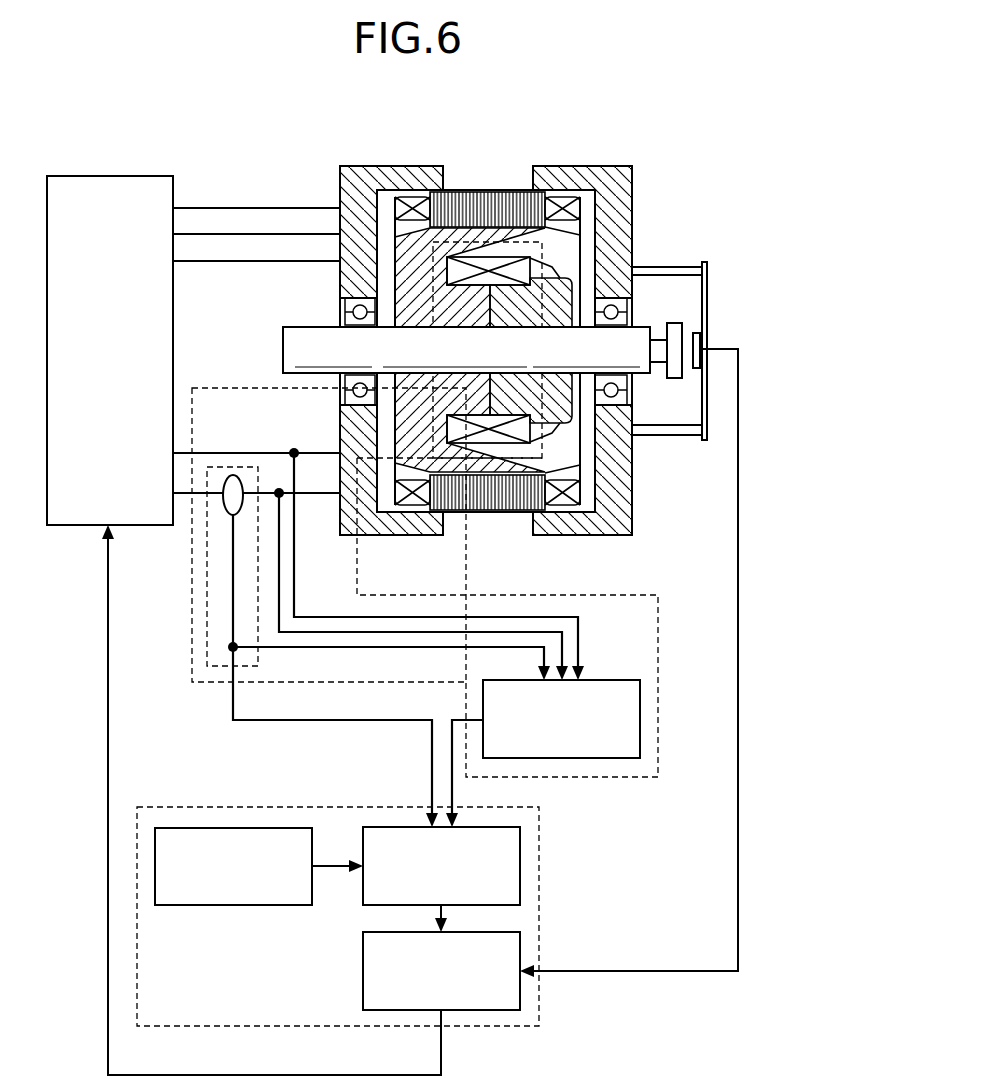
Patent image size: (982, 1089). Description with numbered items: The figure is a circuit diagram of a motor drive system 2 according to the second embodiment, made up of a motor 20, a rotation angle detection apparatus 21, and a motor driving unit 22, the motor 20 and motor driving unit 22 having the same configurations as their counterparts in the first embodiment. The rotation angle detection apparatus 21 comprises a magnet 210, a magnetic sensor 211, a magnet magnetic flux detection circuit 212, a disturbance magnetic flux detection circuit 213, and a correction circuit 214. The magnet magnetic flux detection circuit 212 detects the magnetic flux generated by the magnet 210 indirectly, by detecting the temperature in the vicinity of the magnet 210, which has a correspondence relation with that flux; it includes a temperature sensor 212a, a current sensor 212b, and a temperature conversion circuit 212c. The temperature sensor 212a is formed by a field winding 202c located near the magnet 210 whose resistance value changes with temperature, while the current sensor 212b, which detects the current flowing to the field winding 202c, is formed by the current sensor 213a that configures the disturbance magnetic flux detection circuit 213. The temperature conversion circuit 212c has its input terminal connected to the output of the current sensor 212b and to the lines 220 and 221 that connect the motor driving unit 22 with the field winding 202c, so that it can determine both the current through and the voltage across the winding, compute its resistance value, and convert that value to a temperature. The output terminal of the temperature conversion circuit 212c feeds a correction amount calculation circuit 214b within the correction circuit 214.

The motor drive system 2 is at (654, 95).
The motor 20 is at (425, 165).
The rotation angle detection apparatus 21 is at (708, 287).
The motor driving unit 22 is at (108, 176).
The field winding 202c is at (518, 272).
The magnet 210 is at (678, 332).
The magnetic sensor 211 is at (700, 346).
The magnet magnetic flux detection circuit 212 is at (567, 593).
The temperature sensor 212a is at (488, 350).
The current sensor 212b is at (183, 540).
The temperature conversion circuit 212c is at (603, 678).
The disturbance magnetic flux detection circuit 213 is at (207, 633).
The current sensor 213a is at (226, 512).
The correction circuit 214 is at (365, 806).
The correction amount calculation circuit 214b is at (363, 896).
The line 220 is at (270, 490).
The line 221 is at (313, 451).